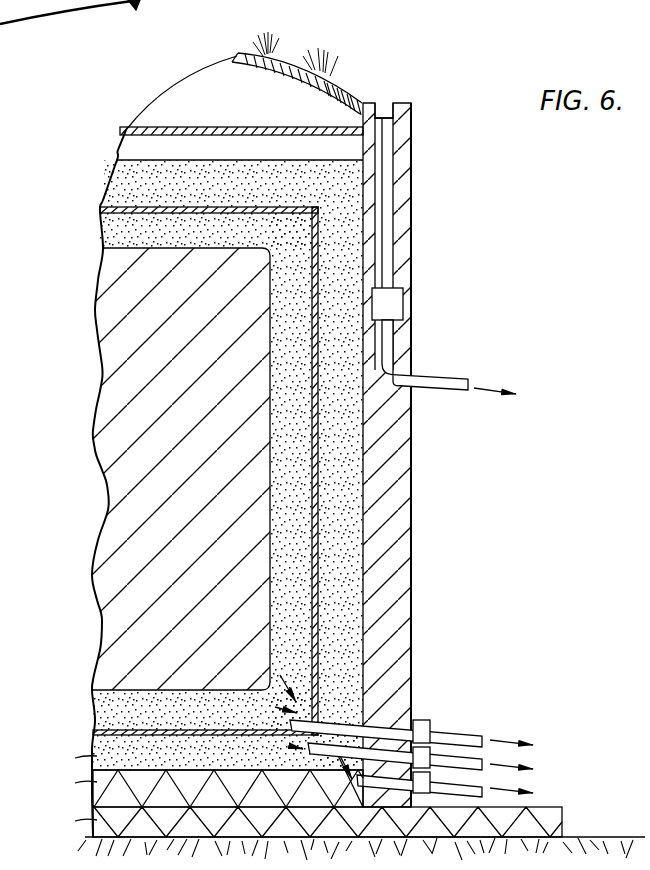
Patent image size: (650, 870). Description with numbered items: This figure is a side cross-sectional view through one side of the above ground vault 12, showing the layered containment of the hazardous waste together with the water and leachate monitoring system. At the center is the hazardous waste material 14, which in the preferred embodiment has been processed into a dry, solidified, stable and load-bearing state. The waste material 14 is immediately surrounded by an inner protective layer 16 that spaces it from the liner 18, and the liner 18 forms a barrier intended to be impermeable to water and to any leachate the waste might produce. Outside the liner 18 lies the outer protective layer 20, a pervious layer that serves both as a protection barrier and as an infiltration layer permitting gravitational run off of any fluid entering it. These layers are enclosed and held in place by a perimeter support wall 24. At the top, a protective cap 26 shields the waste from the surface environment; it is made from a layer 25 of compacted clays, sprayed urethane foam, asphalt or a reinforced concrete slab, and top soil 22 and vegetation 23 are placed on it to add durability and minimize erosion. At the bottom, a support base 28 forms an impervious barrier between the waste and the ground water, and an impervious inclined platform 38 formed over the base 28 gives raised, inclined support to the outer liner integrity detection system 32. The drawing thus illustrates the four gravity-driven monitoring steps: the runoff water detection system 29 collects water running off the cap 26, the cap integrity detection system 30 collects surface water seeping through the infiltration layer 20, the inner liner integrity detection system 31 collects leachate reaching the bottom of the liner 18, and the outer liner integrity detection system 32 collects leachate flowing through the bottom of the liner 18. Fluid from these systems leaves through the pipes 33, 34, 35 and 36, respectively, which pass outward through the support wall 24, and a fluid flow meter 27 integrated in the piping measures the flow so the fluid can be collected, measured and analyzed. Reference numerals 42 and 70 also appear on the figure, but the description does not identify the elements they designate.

The vault 12 is at (482, 218).
The hazardous waste material 14 is at (155, 470).
The inner protective layer 16 is at (293, 607).
The liner 18 is at (313, 553).
The outer protective layer 20 is at (347, 442).
The top soil 22 is at (278, 62).
The vegetation 23 is at (335, 75).
The perimeter support wall 24 is at (402, 468).
The layer 25 is at (211, 88).
The protective cap 26 is at (277, 50).
The fluid flow meter 27 is at (395, 300).
The support base 28 is at (95, 822).
The runoff water detection system 29 is at (398, 100).
The cap integrity detection system 30 is at (337, 523).
The inner liner integrity detection system 31 is at (299, 691).
The outer liner integrity detection system 32 is at (296, 751).
The water run off pipes 33 is at (445, 378).
The pipes 34 is at (473, 788).
The pipes 35 is at (471, 735).
The leachate run off pipes 36 is at (472, 758).
The inclined platform 38 is at (105, 786).
The support arm 42 is at (158, 0).
The top liner 70 is at (163, 147).